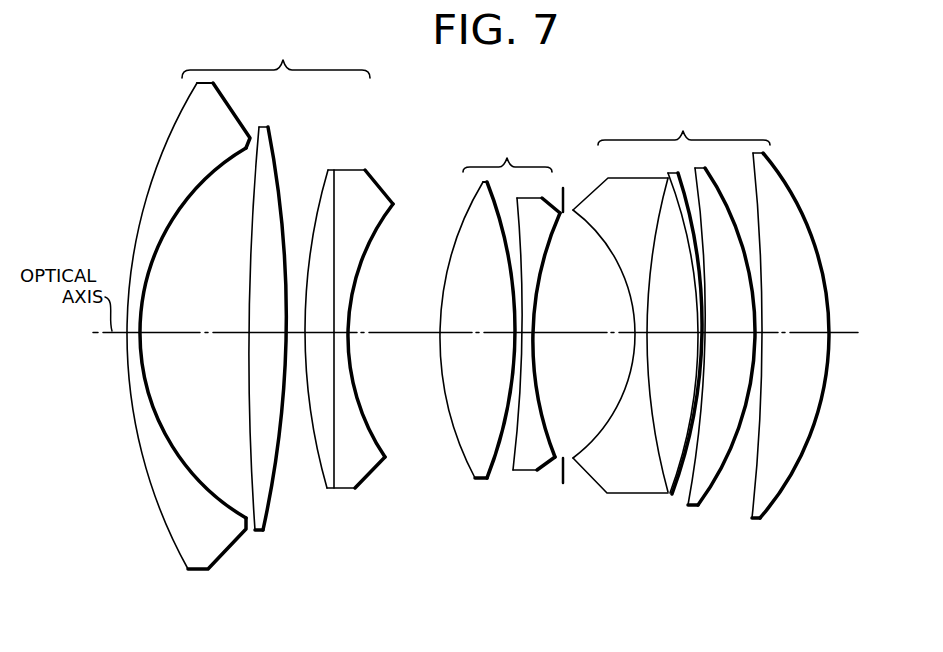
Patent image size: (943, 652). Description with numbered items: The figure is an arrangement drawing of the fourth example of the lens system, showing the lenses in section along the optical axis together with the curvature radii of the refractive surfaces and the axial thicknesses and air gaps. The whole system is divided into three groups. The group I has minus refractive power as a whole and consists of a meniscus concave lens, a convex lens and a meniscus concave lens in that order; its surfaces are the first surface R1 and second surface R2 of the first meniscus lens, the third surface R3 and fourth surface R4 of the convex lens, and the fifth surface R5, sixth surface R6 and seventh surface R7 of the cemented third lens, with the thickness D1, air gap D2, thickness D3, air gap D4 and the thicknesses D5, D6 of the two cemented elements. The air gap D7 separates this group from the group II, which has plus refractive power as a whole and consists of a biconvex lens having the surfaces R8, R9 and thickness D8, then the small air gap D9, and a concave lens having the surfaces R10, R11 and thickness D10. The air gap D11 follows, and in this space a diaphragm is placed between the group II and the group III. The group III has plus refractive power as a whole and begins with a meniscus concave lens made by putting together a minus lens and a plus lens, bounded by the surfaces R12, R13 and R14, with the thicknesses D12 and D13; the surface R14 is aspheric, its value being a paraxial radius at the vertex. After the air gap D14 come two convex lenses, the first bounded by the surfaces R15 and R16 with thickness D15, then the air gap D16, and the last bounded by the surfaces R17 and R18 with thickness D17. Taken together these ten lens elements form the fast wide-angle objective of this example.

The group I is at (276, 54).
The group II is at (507, 150).
The group III is at (684, 123).
The curvature radius of the first refractive plane R1 is at (180, 562).
The curvature radius of the second refractive plane R2 is at (230, 512).
The curvature radius of the third refractive plane R3 is at (254, 520).
The curvature radius of the fourth refractive plane R4 is at (270, 517).
The curvature radius of the fifth refractive plane R5 is at (318, 467).
The curvature radius of the sixth refractive plane R6 is at (334, 468).
The curvature radius of the seventh refractive plane R7 is at (378, 448).
The curvature radius of the eighth refractive plane R8 is at (462, 452).
The curvature radius of the ninth refractive plane R9 is at (496, 455).
The curvature radius of the tenth refractive plane R10 is at (515, 452).
The curvature radius of the eleventh refractive plane R11 is at (548, 443).
The curvature radius of the twelfth refractive plane R12 is at (590, 447).
The curvature radius of the thirteenth refractive plane R13 is at (658, 463).
The curvature radius of the fourteenth refractive plane R14 is at (676, 467).
The curvature radius of the fifteenth refractive plane R15 is at (692, 477).
The curvature radius of the sixteenth refractive plane R16 is at (713, 483).
The curvature radius of the seventeenth refractive plane R17 is at (748, 505).
The curvature radius of the eighteenth refractive plane R18 is at (773, 490).
The axial thickness of the first lens D1 is at (134, 328).
The air gap between first and second lenses D2 is at (194, 319).
The axial thickness of the second lens D3 is at (267, 319).
The air gap between second and third lenses D4 is at (279, 305).
The axial thickness of the third lens element D5 is at (319, 319).
The axial thickness of the fourth lens element D6 is at (343, 324).
The air gap between group I and group II D7 is at (394, 319).
The axial thickness of the biconvex lens D8 is at (477, 320).
The air gap between fifth and sixth lenses D9 is at (515, 331).
The axial thickness of the sixth lens D10 is at (531, 331).
The air gap between group II and group III D11 is at (584, 320).
The axial thickness of the minus lens D12 is at (638, 335).
The axial thickness of the plus lens D13 is at (672, 324).
The air gap after the cemented meniscus lens D14 is at (700, 333).
The axial thickness of the first convex lens of group III D15 is at (729, 324).
The air gap between the two convex lenses D16 is at (762, 333).
The axial thickness of the last convex lens D17 is at (795, 324).